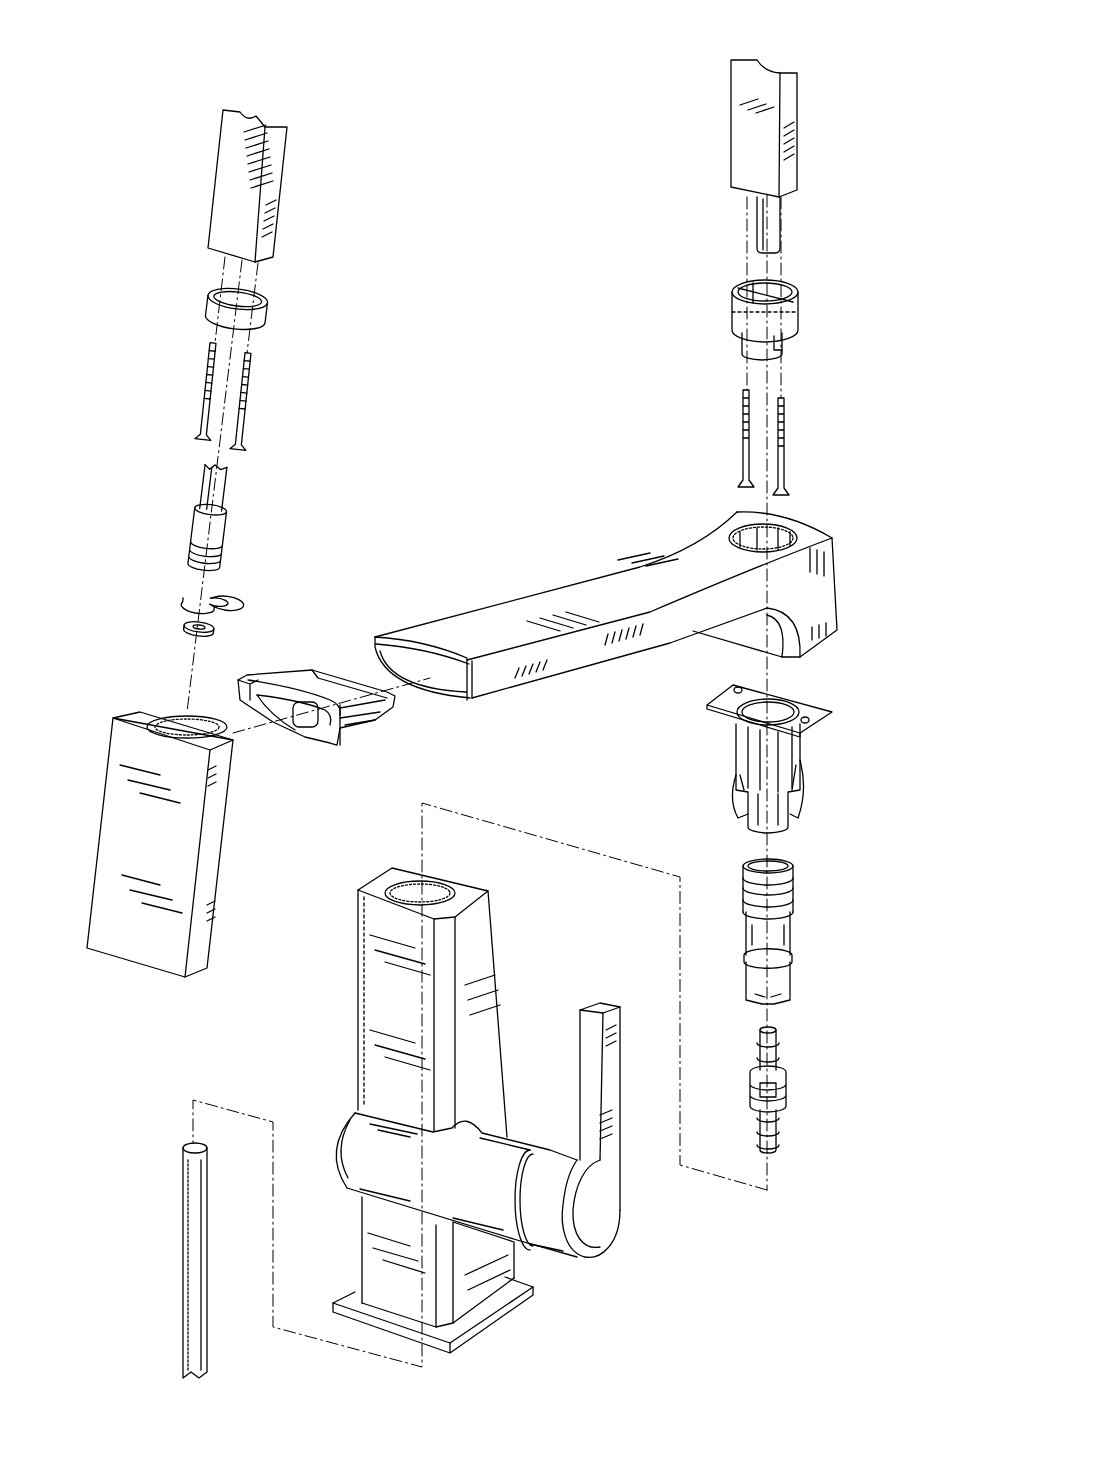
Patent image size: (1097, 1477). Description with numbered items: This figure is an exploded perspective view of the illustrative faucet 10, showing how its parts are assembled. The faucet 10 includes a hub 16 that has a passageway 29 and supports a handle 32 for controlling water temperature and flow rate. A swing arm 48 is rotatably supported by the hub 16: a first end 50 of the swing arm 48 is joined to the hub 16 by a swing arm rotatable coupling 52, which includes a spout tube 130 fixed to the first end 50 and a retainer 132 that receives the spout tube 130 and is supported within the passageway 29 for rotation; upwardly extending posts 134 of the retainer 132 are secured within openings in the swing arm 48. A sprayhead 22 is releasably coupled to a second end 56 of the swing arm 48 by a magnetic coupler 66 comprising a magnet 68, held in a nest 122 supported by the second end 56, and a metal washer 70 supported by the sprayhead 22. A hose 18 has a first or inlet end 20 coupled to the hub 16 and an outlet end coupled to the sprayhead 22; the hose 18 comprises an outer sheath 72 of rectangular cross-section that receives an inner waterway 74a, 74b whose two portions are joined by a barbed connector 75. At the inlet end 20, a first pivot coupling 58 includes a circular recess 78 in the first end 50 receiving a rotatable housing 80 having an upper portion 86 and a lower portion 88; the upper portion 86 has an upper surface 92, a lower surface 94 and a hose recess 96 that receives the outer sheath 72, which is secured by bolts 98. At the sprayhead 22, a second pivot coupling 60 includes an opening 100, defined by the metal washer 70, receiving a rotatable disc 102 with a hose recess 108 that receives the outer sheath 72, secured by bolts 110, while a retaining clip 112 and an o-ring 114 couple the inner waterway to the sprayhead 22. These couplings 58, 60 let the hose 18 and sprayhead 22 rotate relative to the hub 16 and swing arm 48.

The faucet 10 is at (840, 115).
The hub 16 is at (512, 975).
The hose 18 is at (292, 170).
The first or inlet end of hose 20 is at (723, 188).
The wand or sprayhead 22 is at (222, 926).
The passageway 29 is at (410, 888).
The handle 32 is at (615, 1130).
The swing arm 48 is at (592, 560).
The first end of swing arm 50 is at (852, 593).
The swing arm rotatable coupling 52 is at (820, 770).
The second end of swing arm 56 is at (398, 590).
The first pivot coupling 58 is at (680, 350).
The second pivot coupling 60 is at (152, 302).
The magnetic coupler 66 is at (275, 580).
The magnet 68 is at (300, 736).
The metal washer 70 is at (203, 718).
The outer sheath 72 is at (235, 155).
The first portion of inner waterway 74a is at (208, 480).
The second portion of inner waterway 74b is at (195, 1251).
The barbed connector 75 is at (789, 1088).
The circular recess 78 is at (790, 527).
The rotatable housing 80 is at (790, 317).
The upper portion of housing 86 is at (738, 313).
The lower portion of housing 88 is at (740, 343).
The upper surface of housing upper portion 92 is at (735, 290).
The lower surface of housing upper portion 94 is at (780, 350).
The hose recess 96 is at (790, 292).
The bolts 98 is at (750, 438).
The circular recess or opening 100 is at (168, 716).
The rotatable disc 102 is at (268, 310).
The hose recess 108 is at (262, 300).
The bolts 110 is at (215, 393).
The retaining clip 112 is at (185, 598).
The o-ring 114 is at (188, 628).
The nest 122 is at (300, 680).
The spout tube 130 is at (796, 930).
The retainer 132 is at (735, 773).
The upwardly extending posts 134 is at (808, 718).